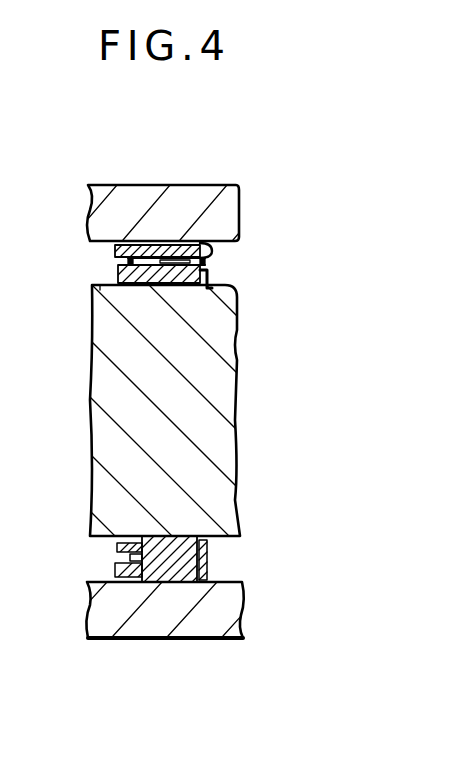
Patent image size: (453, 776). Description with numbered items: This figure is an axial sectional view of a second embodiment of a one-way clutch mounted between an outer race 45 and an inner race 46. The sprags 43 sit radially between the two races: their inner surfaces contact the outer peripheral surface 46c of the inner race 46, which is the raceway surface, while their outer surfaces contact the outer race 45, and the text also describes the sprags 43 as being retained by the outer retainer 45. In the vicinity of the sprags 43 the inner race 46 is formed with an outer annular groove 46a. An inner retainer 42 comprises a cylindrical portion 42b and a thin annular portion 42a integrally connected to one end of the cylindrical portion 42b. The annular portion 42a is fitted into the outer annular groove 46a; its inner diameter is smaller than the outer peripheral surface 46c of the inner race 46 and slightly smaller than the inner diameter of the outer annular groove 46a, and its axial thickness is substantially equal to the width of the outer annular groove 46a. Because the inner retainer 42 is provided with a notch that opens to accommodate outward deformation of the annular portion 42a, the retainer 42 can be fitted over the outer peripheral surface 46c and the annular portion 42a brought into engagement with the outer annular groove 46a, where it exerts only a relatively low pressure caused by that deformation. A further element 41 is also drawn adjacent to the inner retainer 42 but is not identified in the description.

The outer race 45 is at (176, 185).
The washer 41 is at (115, 249).
The inner retainer 42 is at (128, 262).
The annular portion 42a is at (208, 279).
The cylindrical portion 42b is at (147, 278).
The inner race 46 is at (97, 368).
The outer annular groove 46a is at (220, 283).
The outer peripheral surface 46c is at (101, 284).
The sprag 43 is at (168, 578).